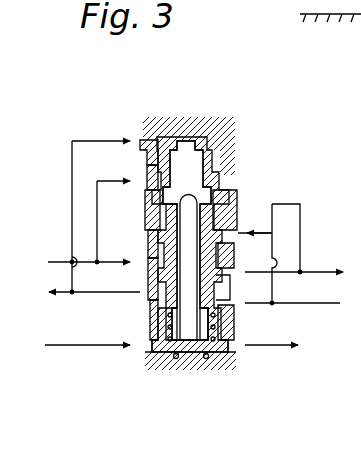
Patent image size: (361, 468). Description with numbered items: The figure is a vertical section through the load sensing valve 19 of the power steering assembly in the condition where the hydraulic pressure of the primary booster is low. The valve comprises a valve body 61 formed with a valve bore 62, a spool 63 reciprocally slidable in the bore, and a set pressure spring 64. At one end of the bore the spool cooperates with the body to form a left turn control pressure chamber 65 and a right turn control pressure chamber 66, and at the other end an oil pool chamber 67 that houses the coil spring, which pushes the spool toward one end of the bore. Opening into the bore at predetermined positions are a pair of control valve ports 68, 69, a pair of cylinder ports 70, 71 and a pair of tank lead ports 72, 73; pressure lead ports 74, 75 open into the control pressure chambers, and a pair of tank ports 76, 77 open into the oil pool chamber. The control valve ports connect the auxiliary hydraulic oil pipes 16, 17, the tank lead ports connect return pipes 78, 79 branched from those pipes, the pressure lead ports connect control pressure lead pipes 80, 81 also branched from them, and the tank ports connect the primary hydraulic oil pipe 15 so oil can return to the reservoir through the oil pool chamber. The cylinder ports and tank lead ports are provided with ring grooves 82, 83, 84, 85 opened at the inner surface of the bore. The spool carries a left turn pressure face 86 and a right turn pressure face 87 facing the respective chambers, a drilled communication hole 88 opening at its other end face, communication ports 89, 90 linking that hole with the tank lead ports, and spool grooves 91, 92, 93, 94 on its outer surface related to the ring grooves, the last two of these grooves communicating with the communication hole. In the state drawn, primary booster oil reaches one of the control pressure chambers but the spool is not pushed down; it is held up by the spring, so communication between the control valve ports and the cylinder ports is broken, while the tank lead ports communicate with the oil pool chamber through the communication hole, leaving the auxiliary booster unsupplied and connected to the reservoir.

The primary hydraulic oil pipe 15 is at (100, 349).
The auxiliary hydraulic oil pipe 16 is at (60, 256).
The auxiliary hydraulic oil pipe 17 is at (60, 294).
The load sensing valve 19 is at (197, 75).
The valve body 61 is at (224, 134).
The valve bore 62 is at (230, 172).
The spool 63 is at (215, 150).
The set pressure spring 64 is at (175, 362).
The left turn control pressure chamber 65 is at (163, 160).
The right turn control pressure chamber 66 is at (177, 132).
The oil pool chamber 67 is at (207, 358).
The control valve port 68 is at (110, 244).
The control valve port 69 is at (158, 312).
The cylinder port 70 is at (228, 268).
The cylinder port 71 is at (232, 318).
The tank lead port 72 is at (226, 196).
The tank lead port 73 is at (238, 228).
The pressure lead port 74 is at (146, 186).
The pressure lead port 75 is at (156, 134).
The tank port 76 is at (152, 358).
The tank port 77 is at (241, 355).
The return pipe 78 is at (304, 216).
The return pipe 79 is at (274, 245).
The control pressure lead pipe 80 is at (107, 178).
The control pressure lead pipe 81 is at (108, 140).
The ring groove 82 is at (238, 287).
The ring groove 83 is at (240, 334).
The ring groove 84 is at (231, 188).
The ring groove 85 is at (240, 208).
The left turn pressure face 86 is at (226, 183).
The right turn pressure face 87 is at (206, 125).
The communication hole 88 is at (176, 362).
The communication port 89 is at (156, 222).
The communication port 90 is at (158, 238).
The spool groove 91 is at (158, 279).
The spool groove 92 is at (160, 320).
The spool groove 93 is at (110, 197).
The spool groove 94 is at (110, 221).